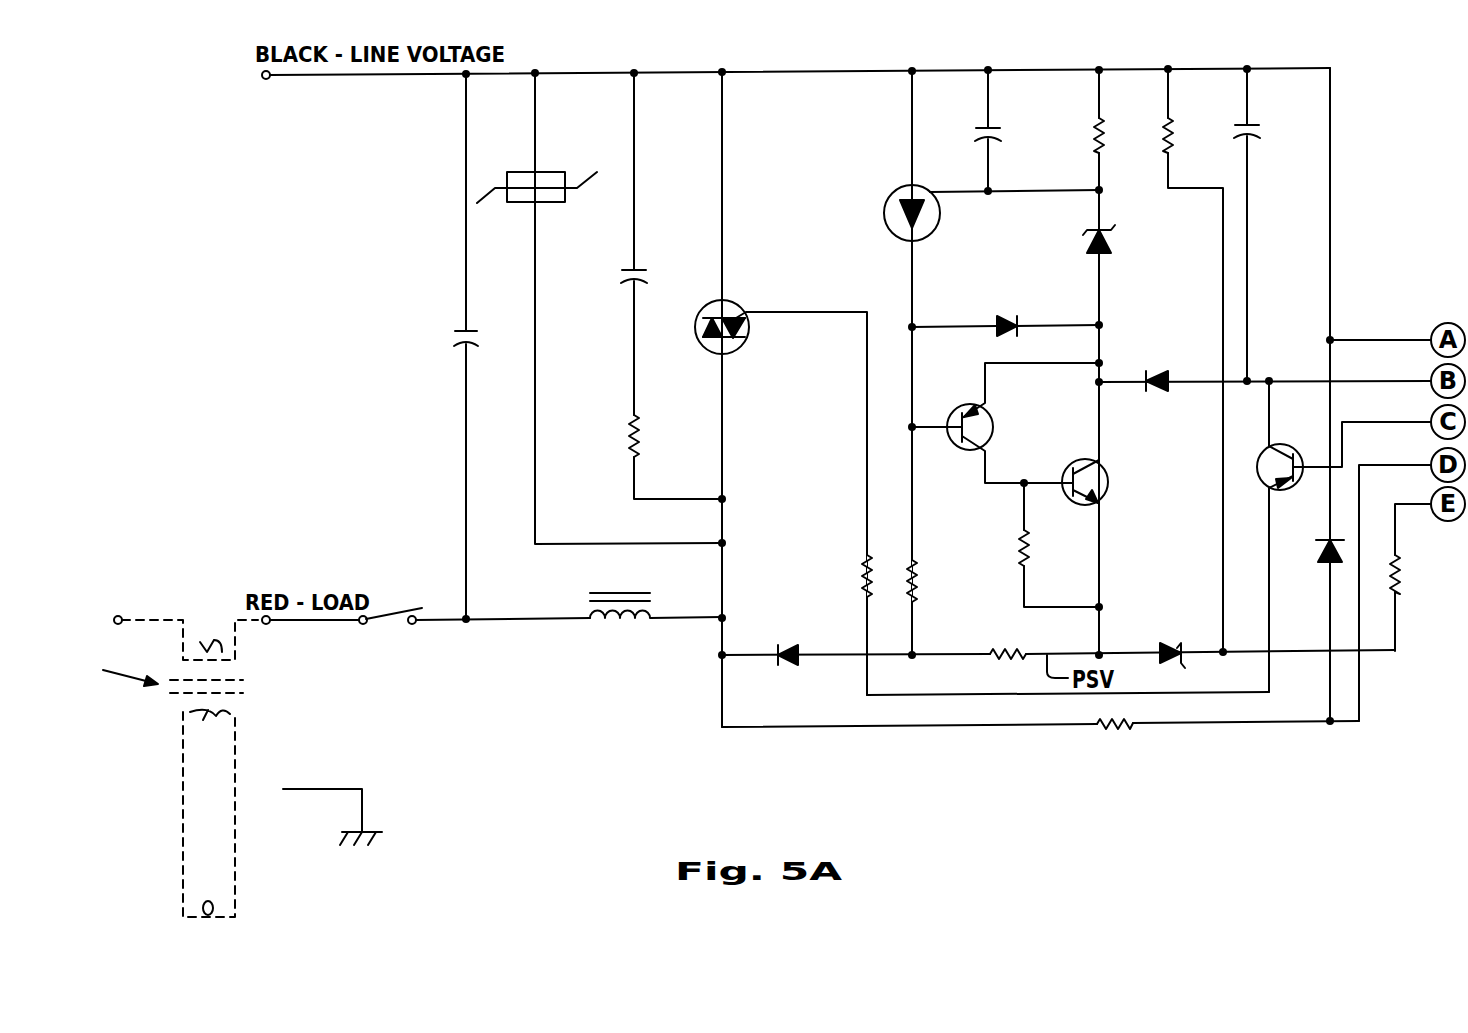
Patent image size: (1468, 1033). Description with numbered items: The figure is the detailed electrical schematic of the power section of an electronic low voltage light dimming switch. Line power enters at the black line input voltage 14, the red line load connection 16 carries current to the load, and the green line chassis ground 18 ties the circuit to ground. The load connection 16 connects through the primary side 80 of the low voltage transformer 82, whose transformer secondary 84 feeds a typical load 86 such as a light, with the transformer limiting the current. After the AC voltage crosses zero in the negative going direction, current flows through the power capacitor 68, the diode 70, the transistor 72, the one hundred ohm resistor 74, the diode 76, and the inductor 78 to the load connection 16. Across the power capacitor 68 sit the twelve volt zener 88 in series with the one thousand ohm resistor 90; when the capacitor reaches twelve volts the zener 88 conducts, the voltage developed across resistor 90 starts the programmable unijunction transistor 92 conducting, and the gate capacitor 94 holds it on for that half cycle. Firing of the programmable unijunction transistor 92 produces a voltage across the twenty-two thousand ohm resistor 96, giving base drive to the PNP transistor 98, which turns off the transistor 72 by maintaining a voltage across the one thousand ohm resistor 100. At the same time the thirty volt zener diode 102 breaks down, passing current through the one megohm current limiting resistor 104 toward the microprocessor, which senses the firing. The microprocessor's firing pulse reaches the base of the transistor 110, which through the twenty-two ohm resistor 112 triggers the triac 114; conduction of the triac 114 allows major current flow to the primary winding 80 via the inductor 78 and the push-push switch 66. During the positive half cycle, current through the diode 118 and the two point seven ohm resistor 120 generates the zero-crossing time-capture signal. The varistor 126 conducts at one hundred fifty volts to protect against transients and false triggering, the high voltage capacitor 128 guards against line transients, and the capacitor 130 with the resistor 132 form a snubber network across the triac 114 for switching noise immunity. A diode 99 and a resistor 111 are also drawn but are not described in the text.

The black line input voltage 14 is at (264, 79).
The red line load connection 16 is at (263, 625).
The green line chassis ground 18 is at (335, 790).
The push-push switch 66 is at (380, 624).
The power capacitor 68 is at (1254, 128).
The diode 70 is at (1150, 372).
The transistor 72 is at (1110, 474).
The 100 ohm resistor 74 is at (1003, 648).
The diode 76 is at (789, 667).
The inductor 78 is at (600, 618).
The primary side of the low voltage transformer 80 is at (215, 650).
The low voltage transformer 82 is at (164, 766).
The transformer secondary 84 is at (217, 713).
The load 86 is at (214, 908).
The 12 volt zener 88 is at (1104, 232).
The 1000 ohm resistor 90 is at (1097, 130).
The programmable unijunction transistor 92 is at (884, 211).
The gate capacitor 94 is at (994, 126).
The 22,000 ohm resistor 96 is at (918, 584).
The PNP transistor 98 is at (996, 420).
The diode 99 is at (1010, 318).
The 1000 ohm resistor 100 is at (1020, 553).
The 30 volt zener diode 102 is at (1175, 645).
The 1 meg ohm current limiting resistor 104 is at (1401, 575).
The transistor 110 is at (1300, 448).
The resistor 111 is at (1173, 137).
The 22 ohm resistor 112 is at (862, 591).
The triac 114 is at (735, 302).
The diode 118 is at (1320, 549).
The 2.7 ohm resistor 120 is at (1112, 736).
The varistor 126 is at (547, 172).
The high voltage capacitor 128 is at (455, 342).
The capacitor 130 is at (628, 287).
The resistor 132 is at (629, 425).